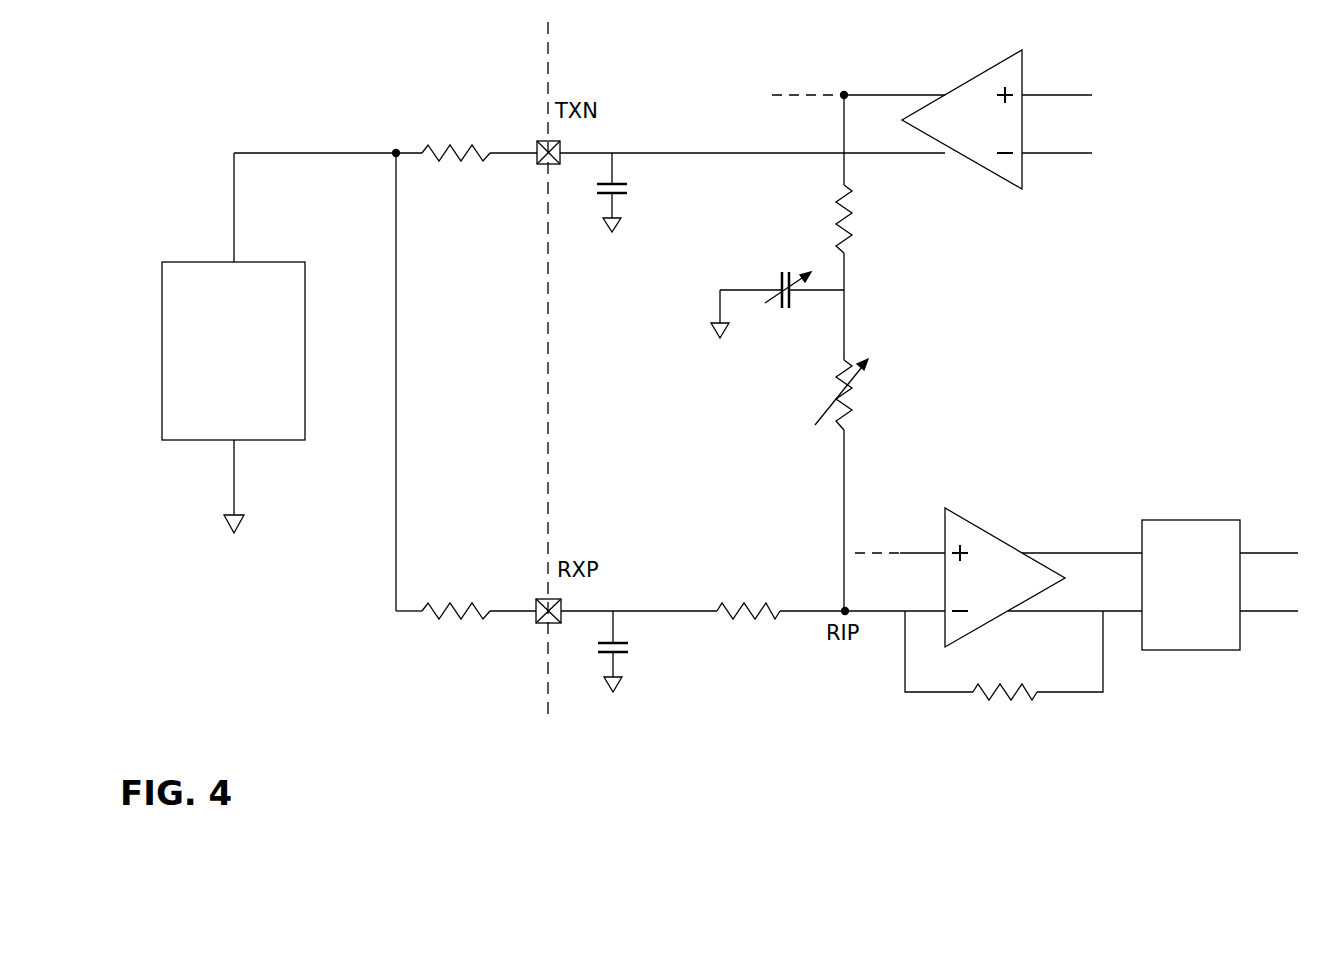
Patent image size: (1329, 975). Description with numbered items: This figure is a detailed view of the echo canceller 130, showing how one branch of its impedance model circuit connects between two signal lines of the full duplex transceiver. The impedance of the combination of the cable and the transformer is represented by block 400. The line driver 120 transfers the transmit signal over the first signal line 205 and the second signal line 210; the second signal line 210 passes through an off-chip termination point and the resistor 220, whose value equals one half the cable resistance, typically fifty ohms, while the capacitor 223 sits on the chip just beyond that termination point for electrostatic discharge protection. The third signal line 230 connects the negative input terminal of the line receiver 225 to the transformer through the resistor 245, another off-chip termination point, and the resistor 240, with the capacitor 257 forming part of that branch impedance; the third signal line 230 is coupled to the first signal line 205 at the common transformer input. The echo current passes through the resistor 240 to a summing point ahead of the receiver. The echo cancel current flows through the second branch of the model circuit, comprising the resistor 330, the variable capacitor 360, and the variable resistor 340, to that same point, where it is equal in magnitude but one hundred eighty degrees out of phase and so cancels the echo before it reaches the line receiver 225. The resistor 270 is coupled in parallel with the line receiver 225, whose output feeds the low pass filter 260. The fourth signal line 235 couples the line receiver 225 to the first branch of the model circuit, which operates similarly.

The block 400 is at (203, 262).
The resistor 220 is at (450, 142).
The second signal line 210 is at (708, 152).
The capacitor 223 is at (630, 191).
The first signal line 205 is at (868, 93).
The line driver 120 is at (1026, 121).
The echo canceller 130 is at (1145, 289).
The resistor 330 is at (856, 212).
The variable capacitor 360 is at (795, 301).
The variable resistor 340 is at (856, 412).
The third signal line 230 is at (396, 440).
The resistor 245 is at (450, 600).
The resistor 240 is at (735, 600).
The capacitor 257 is at (630, 646).
The fourth signal line 235 is at (900, 553).
The line receiver 225 is at (1068, 577).
The low pass filter 260 is at (1200, 520).
The resistor 270 is at (1010, 700).